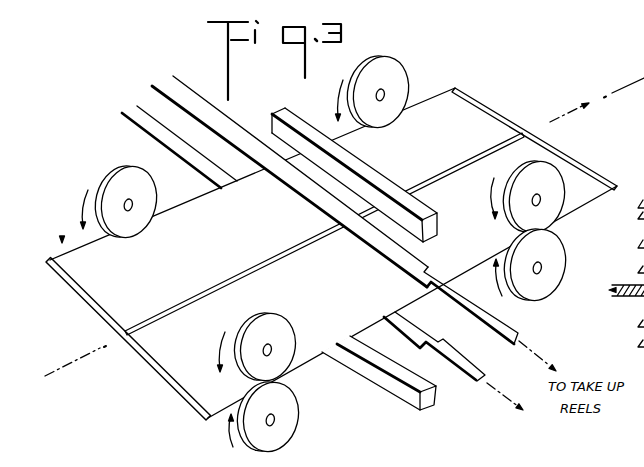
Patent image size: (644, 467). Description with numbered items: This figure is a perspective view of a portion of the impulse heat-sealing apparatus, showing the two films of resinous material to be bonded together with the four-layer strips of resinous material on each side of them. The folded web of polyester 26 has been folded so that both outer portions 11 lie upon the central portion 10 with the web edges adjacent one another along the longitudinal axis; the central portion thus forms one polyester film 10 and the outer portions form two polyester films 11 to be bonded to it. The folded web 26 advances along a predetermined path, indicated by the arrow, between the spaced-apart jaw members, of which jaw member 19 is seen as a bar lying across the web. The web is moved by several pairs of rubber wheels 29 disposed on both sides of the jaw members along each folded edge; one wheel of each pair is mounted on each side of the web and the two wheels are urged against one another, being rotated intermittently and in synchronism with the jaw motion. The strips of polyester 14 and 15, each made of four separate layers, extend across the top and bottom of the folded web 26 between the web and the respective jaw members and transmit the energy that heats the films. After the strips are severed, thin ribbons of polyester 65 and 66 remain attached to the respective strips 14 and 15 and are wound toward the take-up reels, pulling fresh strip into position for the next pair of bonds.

The polyester film 10 is at (163, 383).
The outer portions 11 is at (108, 292).
The strip of polyester 14 is at (180, 153).
The strip of polyester 15 is at (230, 128).
The jaw member 19 is at (377, 188).
The web of polyester 26 is at (62, 238).
The rubber wheels 29 is at (123, 165).
The ribbon of polyester 65 is at (478, 381).
The ribbon of polyester 66 is at (502, 322).